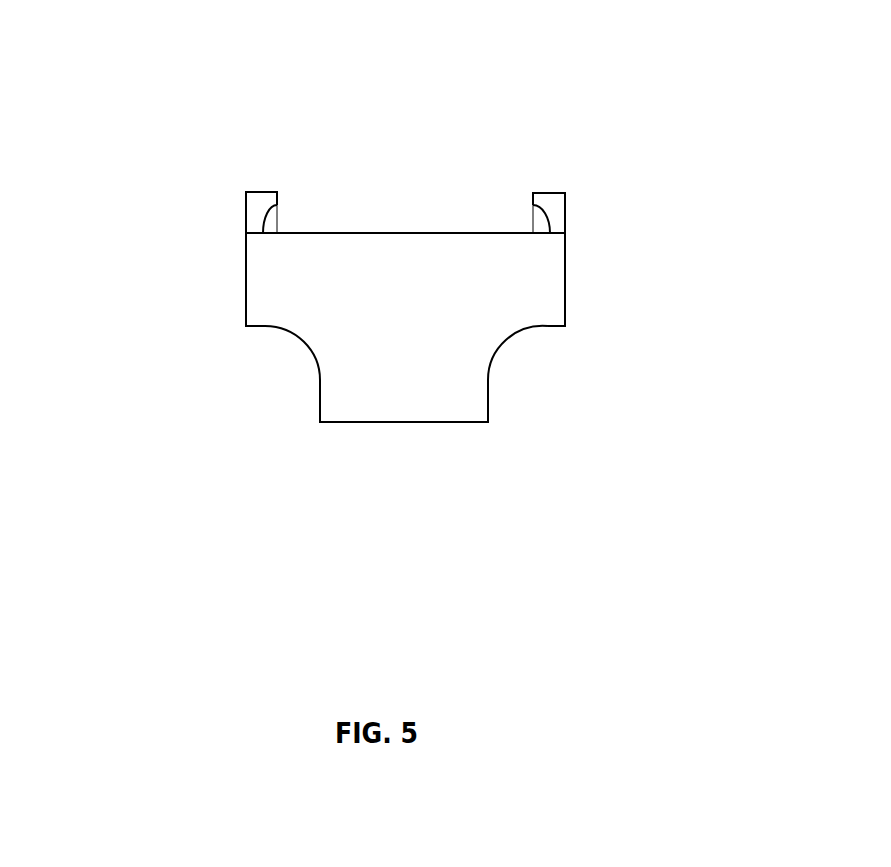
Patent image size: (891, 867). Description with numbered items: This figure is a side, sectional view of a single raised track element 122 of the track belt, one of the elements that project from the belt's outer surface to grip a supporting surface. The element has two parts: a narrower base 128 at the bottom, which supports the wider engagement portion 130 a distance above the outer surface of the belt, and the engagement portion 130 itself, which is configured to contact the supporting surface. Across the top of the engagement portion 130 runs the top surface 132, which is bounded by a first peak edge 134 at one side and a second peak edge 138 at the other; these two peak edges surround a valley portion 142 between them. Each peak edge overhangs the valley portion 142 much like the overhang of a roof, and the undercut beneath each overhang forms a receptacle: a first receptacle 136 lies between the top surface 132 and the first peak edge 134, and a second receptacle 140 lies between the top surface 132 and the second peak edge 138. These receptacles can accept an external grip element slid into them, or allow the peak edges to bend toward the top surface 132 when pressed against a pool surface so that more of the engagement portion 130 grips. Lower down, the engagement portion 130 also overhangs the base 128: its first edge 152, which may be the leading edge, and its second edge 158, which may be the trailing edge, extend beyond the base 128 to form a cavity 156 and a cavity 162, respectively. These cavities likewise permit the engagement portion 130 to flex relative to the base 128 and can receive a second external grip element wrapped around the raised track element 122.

The raised track element 122 is at (747, 246).
The base 128 is at (425, 409).
The engagement portion 130 is at (517, 268).
The top surface 132 is at (429, 210).
The first peak edge 134 is at (252, 179).
The first receptacle 136 is at (289, 203).
The second peak edge 138 is at (574, 189).
The second receptacle 140 is at (522, 204).
The valley portion 142 is at (394, 165).
The first edge 152 is at (224, 310).
The cavity 156 is at (260, 374).
The second edge 158 is at (589, 318).
The cavity 162 is at (567, 374).